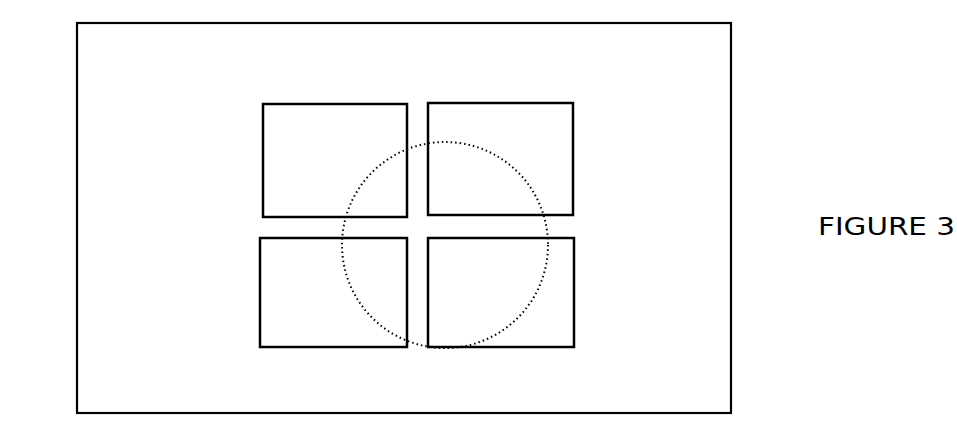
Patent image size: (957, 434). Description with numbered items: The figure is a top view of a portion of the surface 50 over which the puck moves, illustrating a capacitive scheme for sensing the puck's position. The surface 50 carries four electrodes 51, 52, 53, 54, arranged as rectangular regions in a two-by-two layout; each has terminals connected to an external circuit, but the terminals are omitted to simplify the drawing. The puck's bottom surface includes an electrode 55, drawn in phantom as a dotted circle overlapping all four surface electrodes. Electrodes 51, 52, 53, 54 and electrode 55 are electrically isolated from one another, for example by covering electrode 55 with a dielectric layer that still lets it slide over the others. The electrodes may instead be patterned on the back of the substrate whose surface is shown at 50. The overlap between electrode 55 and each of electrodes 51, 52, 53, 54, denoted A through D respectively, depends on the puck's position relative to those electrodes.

The surface 50 is at (724, 96).
The electrode 51 is at (270, 137).
The electrode 52 is at (563, 118).
The electrode 53 is at (270, 316).
The electrode 54 is at (563, 318).
The puck electrode 55 is at (540, 229).